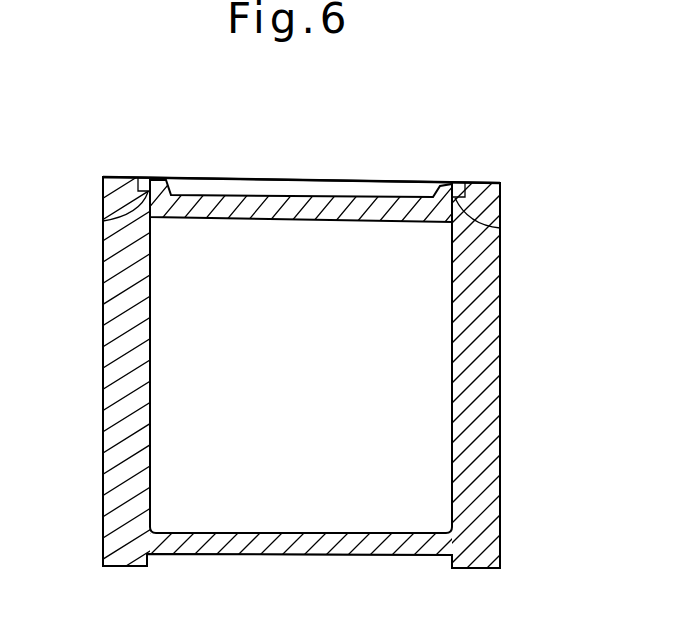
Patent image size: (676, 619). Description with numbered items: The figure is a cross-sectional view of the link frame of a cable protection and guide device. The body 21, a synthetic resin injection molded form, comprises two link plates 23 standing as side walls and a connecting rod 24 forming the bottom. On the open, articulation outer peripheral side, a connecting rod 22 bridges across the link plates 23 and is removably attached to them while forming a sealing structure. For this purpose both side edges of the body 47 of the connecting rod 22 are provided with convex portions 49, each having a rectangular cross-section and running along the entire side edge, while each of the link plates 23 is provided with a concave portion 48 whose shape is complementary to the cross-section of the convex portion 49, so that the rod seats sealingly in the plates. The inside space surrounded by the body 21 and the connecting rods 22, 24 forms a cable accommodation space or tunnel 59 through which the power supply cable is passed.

The body 21 is at (500, 443).
The connecting rod 22 is at (263, 177).
The link plates 23 is at (105, 372).
The connecting rods 24 is at (277, 553).
The body of the connecting rod 47 is at (340, 210).
The concave portion 48 is at (153, 177).
The convex portion 49 is at (108, 221).
The tunnel 59 is at (307, 353).